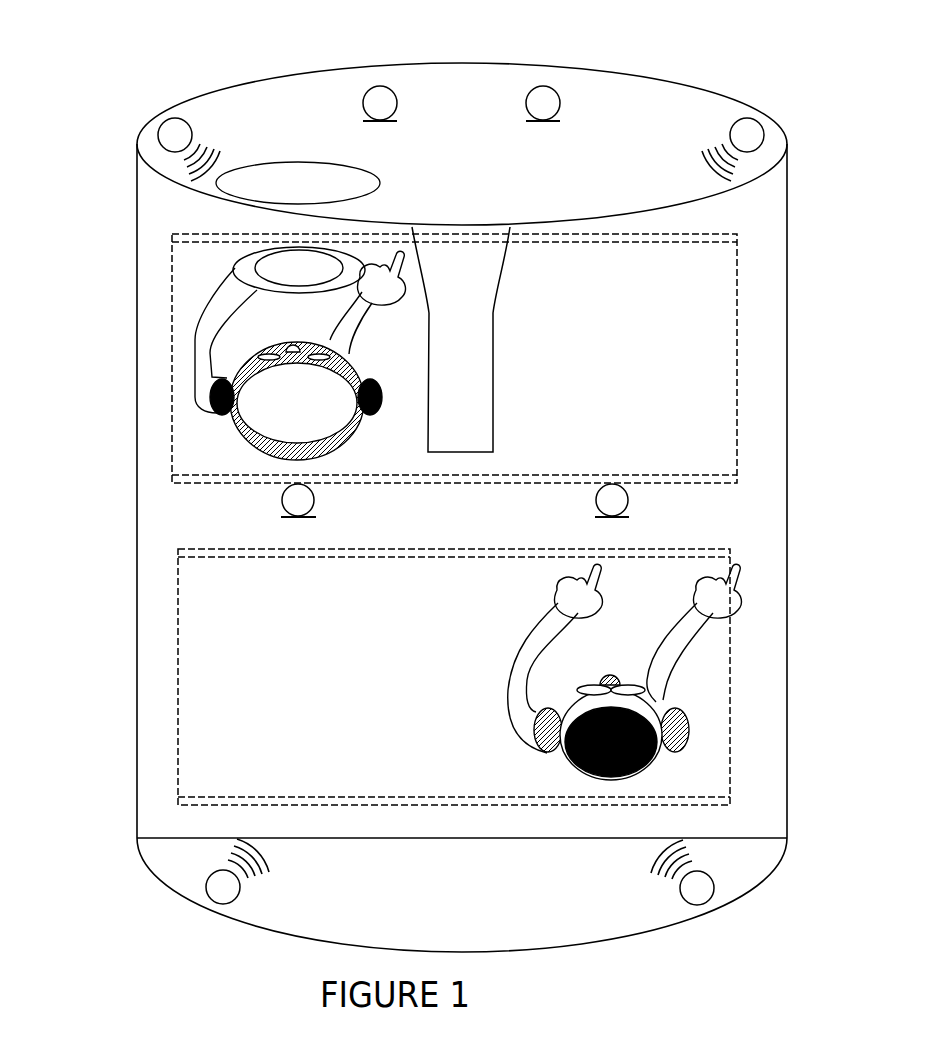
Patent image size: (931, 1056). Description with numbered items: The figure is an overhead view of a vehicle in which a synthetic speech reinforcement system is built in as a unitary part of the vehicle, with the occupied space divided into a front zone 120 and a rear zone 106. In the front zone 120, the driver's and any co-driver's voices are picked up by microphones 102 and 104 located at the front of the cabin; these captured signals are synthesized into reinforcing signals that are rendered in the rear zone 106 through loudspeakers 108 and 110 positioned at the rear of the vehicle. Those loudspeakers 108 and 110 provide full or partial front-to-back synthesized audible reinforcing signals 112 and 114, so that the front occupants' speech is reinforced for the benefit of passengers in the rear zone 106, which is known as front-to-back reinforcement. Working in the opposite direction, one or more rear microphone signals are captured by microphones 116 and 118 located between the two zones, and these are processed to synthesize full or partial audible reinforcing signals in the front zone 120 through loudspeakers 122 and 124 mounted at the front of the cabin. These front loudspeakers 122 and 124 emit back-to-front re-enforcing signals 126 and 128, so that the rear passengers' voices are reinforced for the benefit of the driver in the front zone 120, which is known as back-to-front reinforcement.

The microphone 102 is at (393, 122).
The microphone 104 is at (532, 122).
The rear zone 106 is at (197, 665).
The loudspeaker 108 is at (215, 903).
The loudspeaker 110 is at (708, 907).
The audible reinforcing signal 112 is at (253, 867).
The audible reinforcing signal 114 is at (662, 870).
The microphone 116 is at (283, 510).
The microphone 118 is at (597, 510).
The front zone 120 is at (183, 338).
The loudspeaker 122 is at (170, 119).
The loudspeaker 124 is at (752, 119).
The re-enforcing signal 126 is at (167, 162).
The re-enforcing signal 128 is at (708, 165).